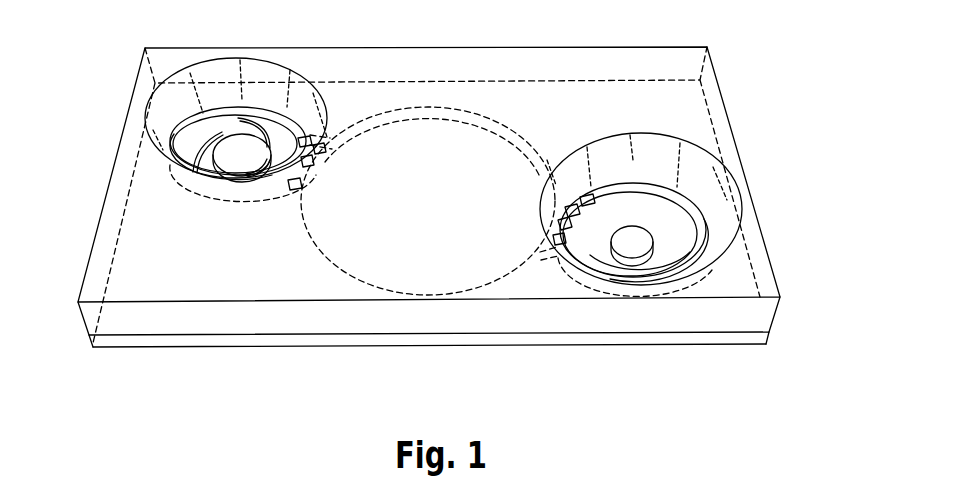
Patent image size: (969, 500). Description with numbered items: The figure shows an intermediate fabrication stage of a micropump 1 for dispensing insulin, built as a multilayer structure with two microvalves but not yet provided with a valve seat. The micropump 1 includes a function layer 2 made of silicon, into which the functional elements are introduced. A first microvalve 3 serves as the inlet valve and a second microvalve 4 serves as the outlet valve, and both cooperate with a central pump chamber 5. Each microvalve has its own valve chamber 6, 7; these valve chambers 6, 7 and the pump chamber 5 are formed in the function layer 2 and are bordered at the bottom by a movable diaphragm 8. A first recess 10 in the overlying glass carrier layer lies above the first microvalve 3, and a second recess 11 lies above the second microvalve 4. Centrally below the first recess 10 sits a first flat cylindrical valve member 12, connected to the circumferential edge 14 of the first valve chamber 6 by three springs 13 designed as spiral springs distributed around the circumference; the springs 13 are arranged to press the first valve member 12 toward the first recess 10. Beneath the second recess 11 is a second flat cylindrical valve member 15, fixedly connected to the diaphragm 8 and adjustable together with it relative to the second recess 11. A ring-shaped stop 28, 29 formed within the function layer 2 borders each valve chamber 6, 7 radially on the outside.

The micropump 1 is at (763, 39).
The function layer 2 is at (432, 339).
The first microvalve 3 is at (220, 232).
The second microvalve 4 is at (614, 110).
The pump chamber 5 is at (430, 143).
The valve chamber 6 is at (283, 140).
The valve chamber 7 is at (657, 219).
The diaphragm 8 is at (337, 347).
The first recess 10 is at (273, 97).
The second recess 11 is at (660, 163).
The first valve member 12 is at (217, 127).
The springs 13 is at (213, 143).
The circumferential edge 14 is at (233, 156).
The second valve member 15 is at (633, 242).
The ring-shaped stop 28 is at (260, 107).
The ring-shaped stop 29 is at (607, 187).